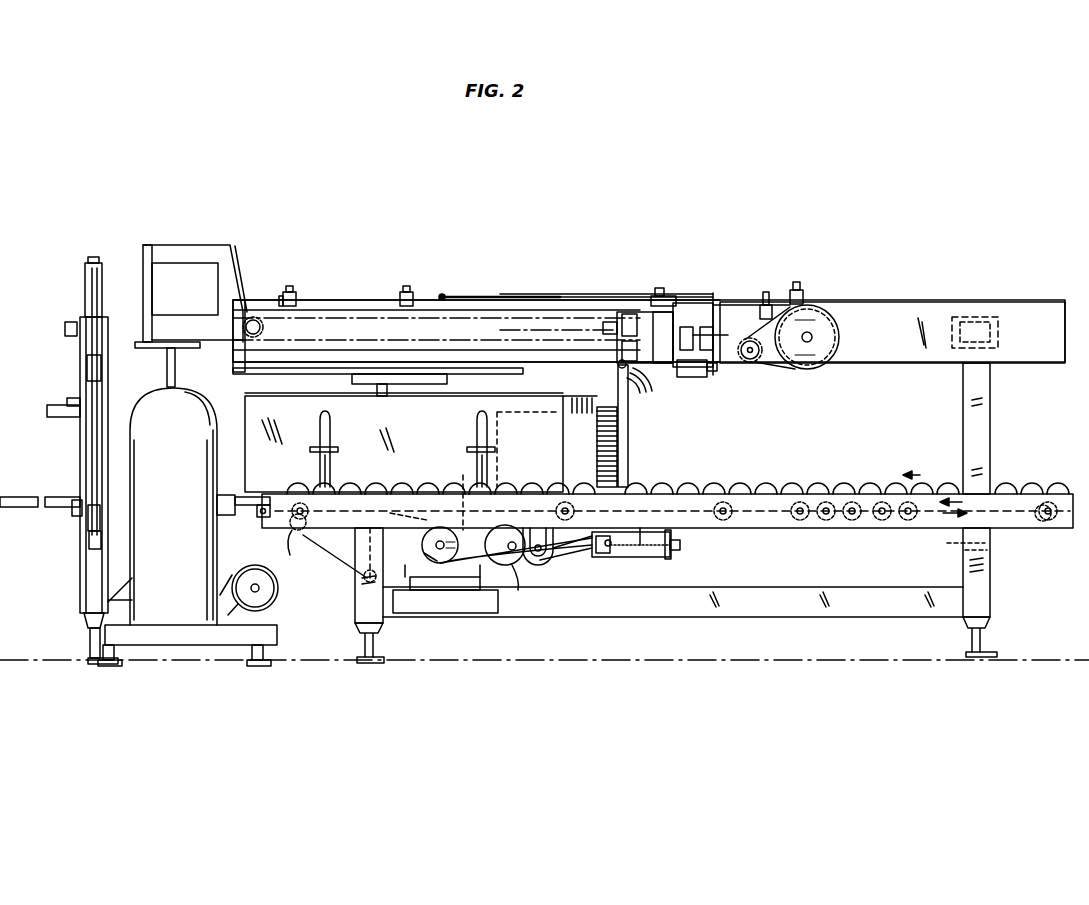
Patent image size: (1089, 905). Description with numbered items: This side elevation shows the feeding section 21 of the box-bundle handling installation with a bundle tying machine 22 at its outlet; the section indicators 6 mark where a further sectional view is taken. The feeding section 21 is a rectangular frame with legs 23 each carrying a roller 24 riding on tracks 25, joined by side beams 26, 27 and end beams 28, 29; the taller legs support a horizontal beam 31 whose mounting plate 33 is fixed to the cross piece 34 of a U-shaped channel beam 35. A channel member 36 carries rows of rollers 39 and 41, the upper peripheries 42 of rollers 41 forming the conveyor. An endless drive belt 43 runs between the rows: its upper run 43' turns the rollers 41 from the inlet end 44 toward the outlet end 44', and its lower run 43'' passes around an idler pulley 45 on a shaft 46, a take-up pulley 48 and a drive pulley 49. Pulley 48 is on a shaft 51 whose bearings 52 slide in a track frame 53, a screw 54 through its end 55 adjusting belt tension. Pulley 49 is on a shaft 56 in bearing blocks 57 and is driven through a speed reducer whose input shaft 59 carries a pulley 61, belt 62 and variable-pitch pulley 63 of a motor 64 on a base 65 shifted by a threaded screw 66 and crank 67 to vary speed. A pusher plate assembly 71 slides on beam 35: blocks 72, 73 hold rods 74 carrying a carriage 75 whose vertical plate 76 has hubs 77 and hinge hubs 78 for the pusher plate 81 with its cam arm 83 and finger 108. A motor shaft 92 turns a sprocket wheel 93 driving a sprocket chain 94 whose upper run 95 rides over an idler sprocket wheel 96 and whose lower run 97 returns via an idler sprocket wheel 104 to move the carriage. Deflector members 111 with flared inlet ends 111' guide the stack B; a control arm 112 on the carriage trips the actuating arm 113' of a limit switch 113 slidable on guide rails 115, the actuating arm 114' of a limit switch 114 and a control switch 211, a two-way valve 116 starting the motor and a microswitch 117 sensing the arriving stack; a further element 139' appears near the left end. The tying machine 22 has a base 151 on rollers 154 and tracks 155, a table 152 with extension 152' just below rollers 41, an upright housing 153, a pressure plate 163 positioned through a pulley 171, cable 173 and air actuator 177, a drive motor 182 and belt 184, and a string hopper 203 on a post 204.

The section line 6- 6 is at (1082, 236).
The feeding section 21 is at (882, 266).
The supply unit 22 is at (165, 461).
The leg 23 is at (995, 572).
The roller 24 is at (970, 637).
The track 25 is at (988, 648).
The side beam 26 is at (772, 610).
The side beam 27 is at (472, 615).
The end beam 28 is at (952, 547).
The end beam 29 is at (408, 495).
The horizontal beam 31 is at (998, 339).
The mounting plate 33 is at (1003, 318).
The cross piece 34 is at (383, 310).
The U-shaped channel beam 35 is at (884, 360).
The channel member 36 is at (840, 528).
The roller 39 is at (687, 520).
The roller 41 is at (826, 478).
The upper periphery 42 is at (733, 488).
The endless drive belt 43 is at (880, 540).
The upper run 43' is at (915, 486).
The lower run 43'' is at (365, 510).
The inlet end 44 is at (1009, 428).
The outlet end 44' is at (195, 475).
The idler pulley 45 is at (672, 519).
The transverse shaft 46 is at (366, 578).
The take-up pulley 48 is at (623, 557).
The drive pulley 49 is at (548, 555).
The transverse shaft 51 is at (607, 557).
The bearing 52 is at (610, 547).
The track frame 53 is at (667, 560).
The screw 54 is at (645, 543).
The end 55 is at (680, 558).
The transverse shaft 56 is at (538, 528).
The bearing block 57 is at (597, 473).
The input shaft 59 is at (517, 560).
The pulley 61 is at (500, 534).
The belt 62 is at (463, 476).
The pulley 63 is at (440, 534).
The motor 64 is at (383, 620).
The base 65 is at (447, 605).
The threaded screw 66 is at (468, 604).
The crank 67 is at (410, 604).
The pusher plate assembly 71 is at (640, 440).
The block 72 is at (232, 342).
The block 73 is at (713, 318).
The rod 74 is at (305, 322).
The pusher plate carriage 75 is at (717, 288).
The vertical plate 76 is at (600, 331).
The hub 77 is at (633, 307).
The hinge hub 78 is at (603, 400).
The pusher plate 81 is at (628, 455).
The curved cam arm 83 is at (643, 397).
The shaft 92 is at (812, 346).
The sprocket wheel 93 is at (835, 332).
The sprocket chain 94 is at (755, 368).
The upper run 95 is at (767, 303).
The idler sprocket wheel 96 is at (255, 340).
The lower run 97 is at (482, 303).
The idler sprocket wheel 104 is at (742, 372).
The finger 108 is at (575, 538).
The deflector member 111 is at (398, 430).
The flared inlet end 111' is at (456, 428).
The control arm 112 is at (673, 296).
The limit switch 113 is at (676, 268).
The actuating arm 113' is at (596, 333).
The limit switch 114 is at (286, 281).
The actuating arm 114' is at (266, 294).
The guide rail 115 is at (513, 292).
The two-way valve 116 is at (803, 293).
The microswitch 117 is at (270, 474).
The pin 139' is at (306, 545).
The base 151 is at (167, 645).
The horizontal table 152 is at (243, 526).
The horizontal extension 152' is at (41, 519).
The upright housing 153 is at (157, 410).
The roller 154 is at (240, 660).
The track 155 is at (270, 660).
The pressure plate 163 is at (68, 418).
The pulley 171 is at (99, 267).
The cable 173 is at (92, 337).
The air actuator 177 is at (92, 478).
The drive motor 182 is at (273, 605).
The belt 184 is at (232, 568).
The hopper 203 is at (203, 232).
The post 204 is at (167, 366).
The control switch 211 is at (407, 292).
The box blank stack B is at (600, 392).